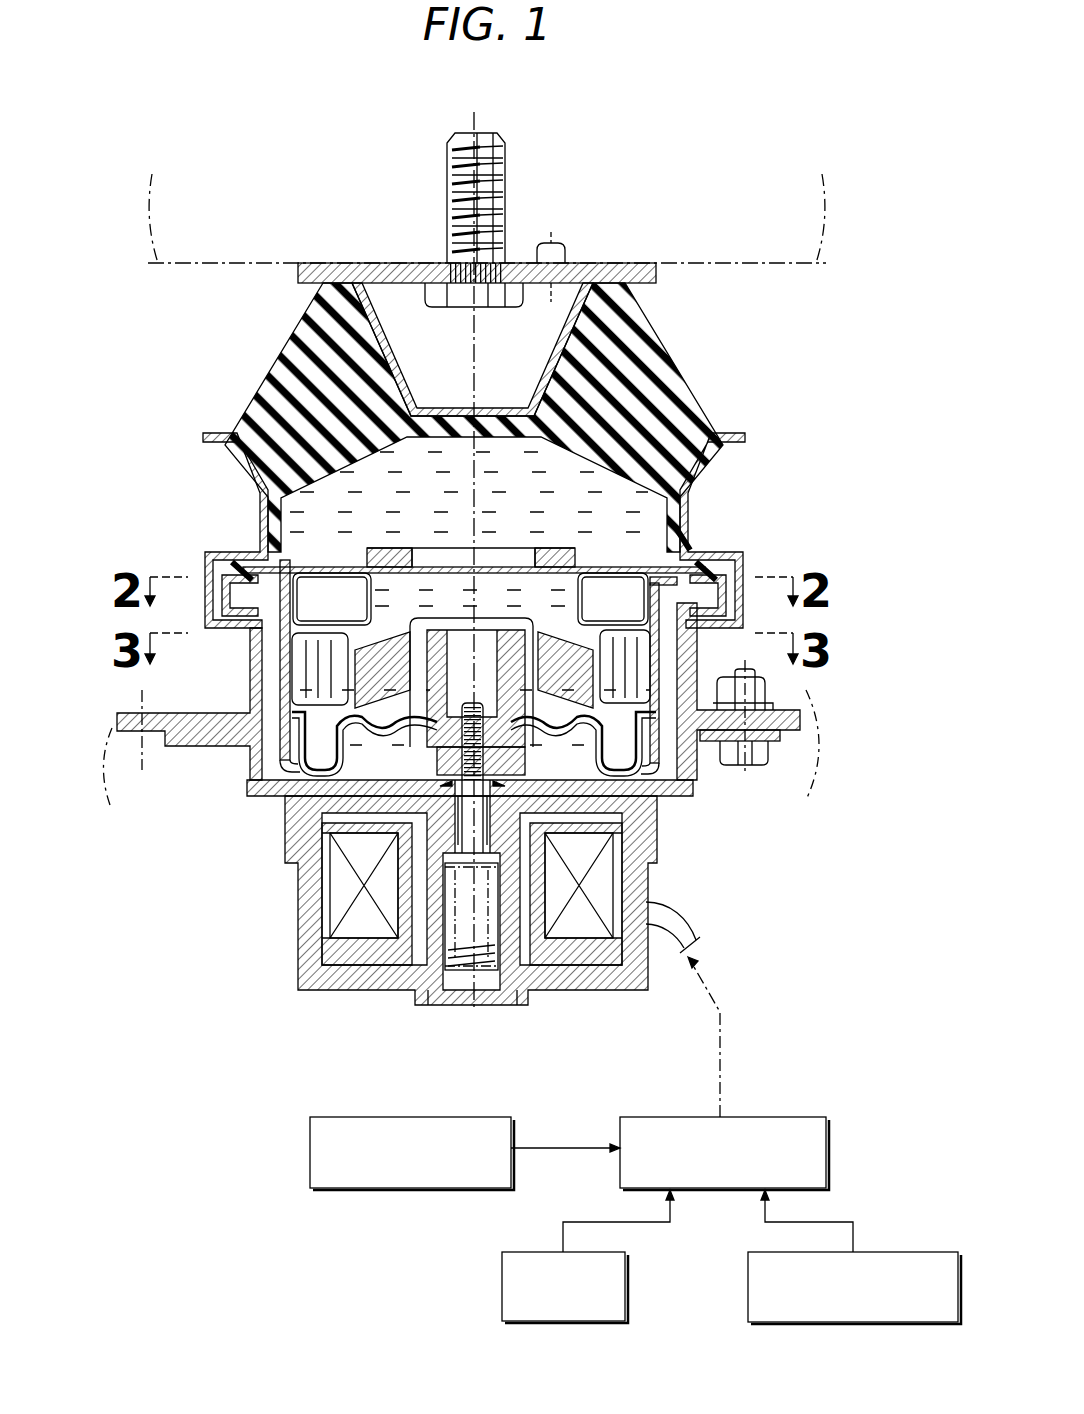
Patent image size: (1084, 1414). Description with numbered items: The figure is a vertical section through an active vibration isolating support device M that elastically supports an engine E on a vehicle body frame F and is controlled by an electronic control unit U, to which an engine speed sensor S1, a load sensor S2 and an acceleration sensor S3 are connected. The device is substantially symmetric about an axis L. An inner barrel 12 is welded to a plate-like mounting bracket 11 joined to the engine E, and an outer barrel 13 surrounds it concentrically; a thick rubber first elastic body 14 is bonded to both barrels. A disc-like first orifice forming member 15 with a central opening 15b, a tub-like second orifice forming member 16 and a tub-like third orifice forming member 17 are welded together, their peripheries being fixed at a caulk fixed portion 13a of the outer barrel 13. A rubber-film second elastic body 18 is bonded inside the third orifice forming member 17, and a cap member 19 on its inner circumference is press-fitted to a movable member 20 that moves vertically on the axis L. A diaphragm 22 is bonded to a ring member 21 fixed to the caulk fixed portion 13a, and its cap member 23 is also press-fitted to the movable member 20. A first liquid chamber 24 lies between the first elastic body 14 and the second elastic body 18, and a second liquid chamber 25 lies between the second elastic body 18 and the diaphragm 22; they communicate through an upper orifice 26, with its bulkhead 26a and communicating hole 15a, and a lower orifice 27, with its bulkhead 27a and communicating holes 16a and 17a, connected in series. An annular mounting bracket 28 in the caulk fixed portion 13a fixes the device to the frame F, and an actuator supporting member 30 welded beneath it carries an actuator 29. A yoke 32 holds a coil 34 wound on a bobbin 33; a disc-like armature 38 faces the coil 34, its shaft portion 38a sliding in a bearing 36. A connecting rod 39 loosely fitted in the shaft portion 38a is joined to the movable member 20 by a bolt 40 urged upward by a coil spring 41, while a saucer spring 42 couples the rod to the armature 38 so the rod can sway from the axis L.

The axis L is at (477, 124).
The mounting bracket 11 is at (641, 263).
The engine E is at (734, 270).
The first elastic body 14 is at (297, 381).
The inner barrel 12 is at (389, 356).
The active vibration isolating support device M is at (737, 497).
The outer barrel 13 is at (240, 478).
The caulk fixed portion 13a is at (207, 560).
The ring member 21 is at (225, 578).
The first orifice forming member 15 is at (392, 543).
The opening 15b is at (427, 560).
The communicating hole 15a is at (628, 566).
The first liquid chamber 24 is at (474, 492).
The upper orifice 26 is at (313, 583).
The bulkhead 26a is at (592, 575).
The second orifice forming member 16 is at (314, 620).
The communicating hole 16a is at (619, 599).
The third orifice forming member 17 is at (323, 677).
The communicating hole 17a is at (634, 666).
The second elastic body 18 is at (373, 655).
The second liquid chamber 25 is at (565, 672).
The cap member 19 is at (492, 615).
The movable member 20 is at (430, 743).
The cap member 23 is at (422, 687).
The lower orifice 27 is at (307, 648).
The bulkhead 27a is at (643, 673).
The mounting bracket 28 is at (196, 713).
The vehicle body frame F is at (748, 701).
The diaphragm 22 is at (378, 740).
The armature 38 is at (587, 780).
The connecting rod 39 is at (510, 758).
The saucer spring 42 is at (513, 782).
The actuator supporting member 30 is at (245, 777).
The actuator 29 is at (260, 926).
The yoke 32 is at (371, 993).
The bobbin 33 is at (345, 962).
The coil 34 is at (337, 882).
The shaft portion 38a is at (508, 885).
The bolt 40 is at (471, 916).
The coil spring 41 is at (523, 993).
The bearing 36 is at (442, 997).
The electronic control unit U is at (779, 1117).
The engine speed sensor S1 is at (398, 1189).
The load sensor S2 is at (502, 1285).
The acceleration sensor S3 is at (917, 1252).